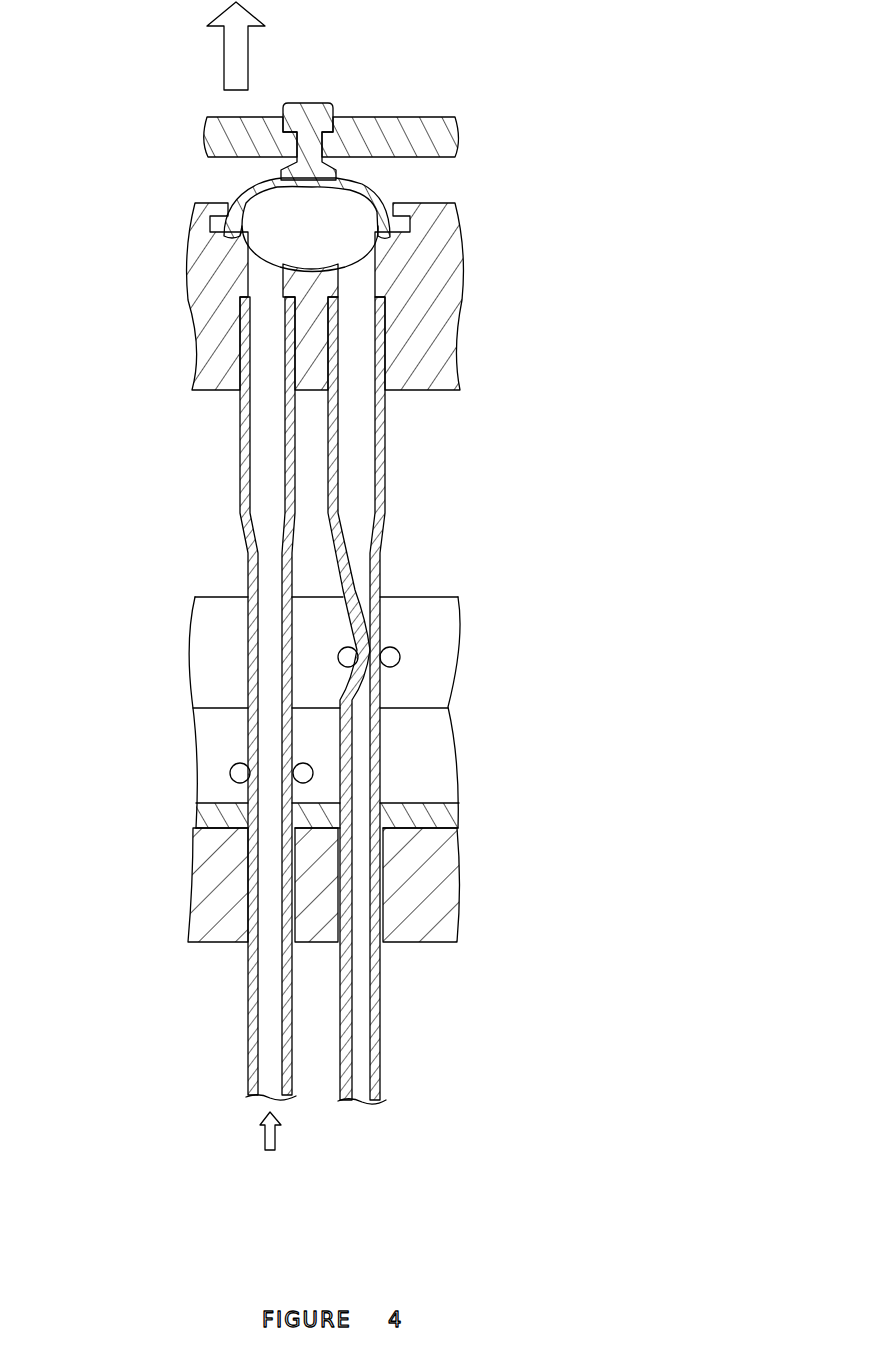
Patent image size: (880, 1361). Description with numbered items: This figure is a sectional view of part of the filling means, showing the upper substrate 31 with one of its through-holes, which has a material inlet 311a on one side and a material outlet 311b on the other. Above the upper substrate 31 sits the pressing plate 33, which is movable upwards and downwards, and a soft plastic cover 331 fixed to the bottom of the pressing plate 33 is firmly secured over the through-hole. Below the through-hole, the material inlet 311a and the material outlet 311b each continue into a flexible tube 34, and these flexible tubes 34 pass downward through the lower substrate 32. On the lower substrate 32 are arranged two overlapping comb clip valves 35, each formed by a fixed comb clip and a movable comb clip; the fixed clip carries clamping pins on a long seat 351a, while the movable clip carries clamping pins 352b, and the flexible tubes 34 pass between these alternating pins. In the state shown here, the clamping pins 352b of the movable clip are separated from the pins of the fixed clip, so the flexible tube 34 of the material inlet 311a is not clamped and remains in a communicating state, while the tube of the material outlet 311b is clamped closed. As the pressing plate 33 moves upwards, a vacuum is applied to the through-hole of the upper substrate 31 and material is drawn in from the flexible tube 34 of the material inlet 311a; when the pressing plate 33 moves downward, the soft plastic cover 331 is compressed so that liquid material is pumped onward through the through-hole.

The pressing plate 33 is at (400, 118).
The soft plastic cover 331 is at (387, 180).
The upper substrate 31 is at (443, 277).
The material inlet 311a is at (263, 328).
The material outlet 311b is at (360, 347).
The flexible tube 34 is at (242, 840).
The comb clip valve 35 is at (443, 633).
The long seat 351a is at (301, 760).
The clamping pin 352b is at (232, 772).
The lower substrate 32 is at (420, 938).